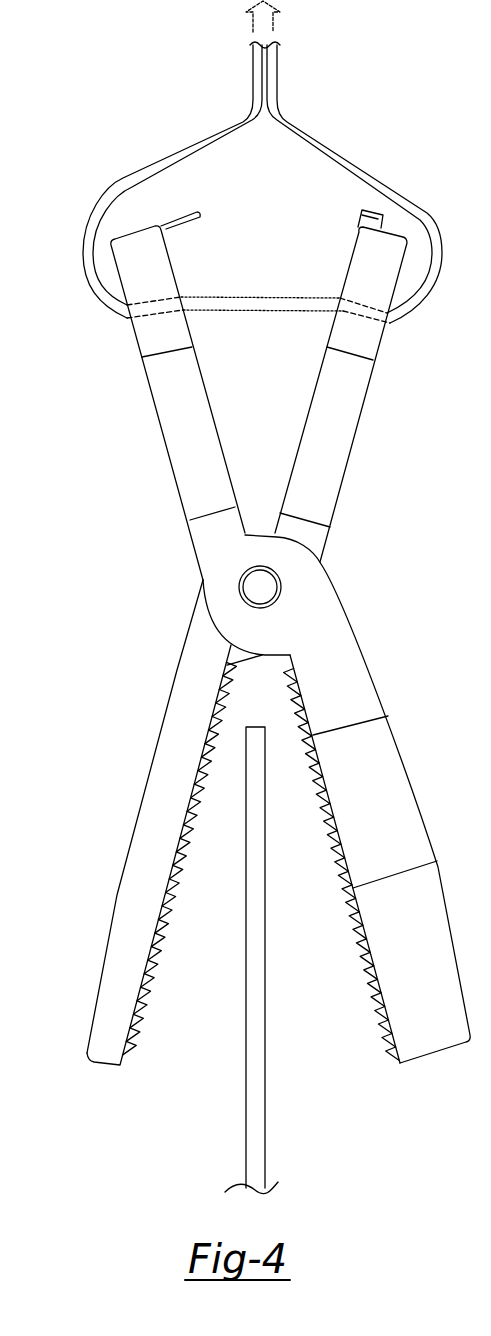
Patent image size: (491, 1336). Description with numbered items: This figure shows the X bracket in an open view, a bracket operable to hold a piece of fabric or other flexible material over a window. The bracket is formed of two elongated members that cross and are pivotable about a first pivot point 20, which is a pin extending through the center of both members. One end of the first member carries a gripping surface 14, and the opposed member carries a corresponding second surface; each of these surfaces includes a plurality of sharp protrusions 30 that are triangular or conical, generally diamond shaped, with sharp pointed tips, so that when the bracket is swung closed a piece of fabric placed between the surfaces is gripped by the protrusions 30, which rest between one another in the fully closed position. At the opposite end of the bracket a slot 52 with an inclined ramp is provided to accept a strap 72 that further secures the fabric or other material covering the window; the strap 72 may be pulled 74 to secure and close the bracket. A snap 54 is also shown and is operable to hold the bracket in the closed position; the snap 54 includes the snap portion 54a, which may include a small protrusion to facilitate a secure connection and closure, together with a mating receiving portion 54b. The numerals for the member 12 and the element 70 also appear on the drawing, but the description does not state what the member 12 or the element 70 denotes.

The first arm 12 is at (130, 1023).
The second arm 14 is at (390, 1033).
The pivot 20 is at (262, 587).
The teeth 30 is at (377, 997).
The handle portion 52 is at (130, 318).
The latch 54 is at (371, 211).
The first latch member 54a is at (200, 213).
The second latch member 54b is at (358, 217).
The rod 70 is at (258, 1160).
The strap loop 72 is at (280, 130).
The pull direction 74 is at (268, 30).